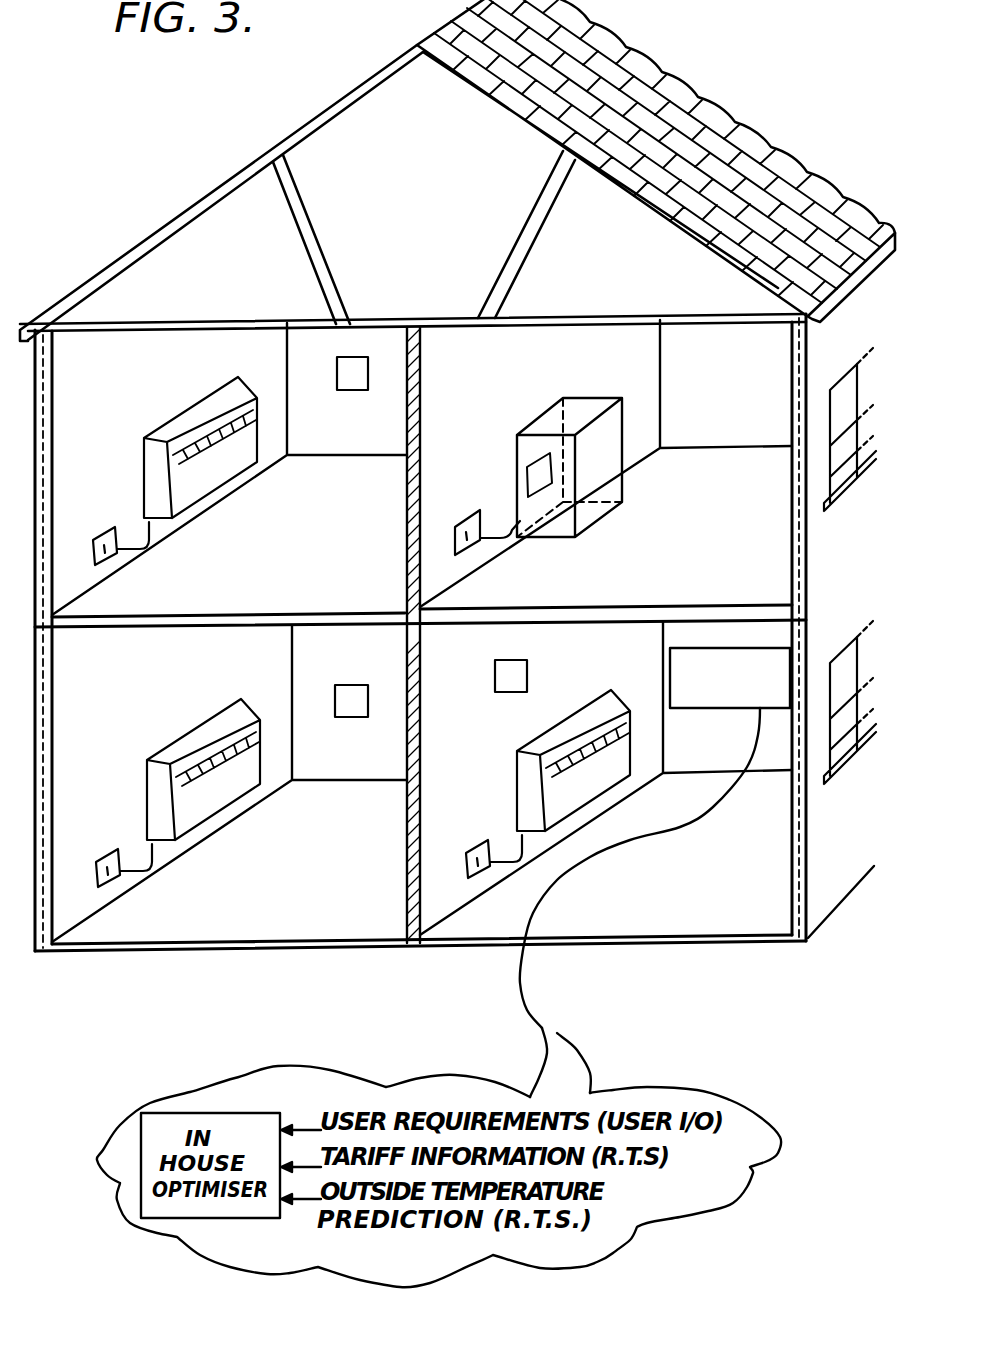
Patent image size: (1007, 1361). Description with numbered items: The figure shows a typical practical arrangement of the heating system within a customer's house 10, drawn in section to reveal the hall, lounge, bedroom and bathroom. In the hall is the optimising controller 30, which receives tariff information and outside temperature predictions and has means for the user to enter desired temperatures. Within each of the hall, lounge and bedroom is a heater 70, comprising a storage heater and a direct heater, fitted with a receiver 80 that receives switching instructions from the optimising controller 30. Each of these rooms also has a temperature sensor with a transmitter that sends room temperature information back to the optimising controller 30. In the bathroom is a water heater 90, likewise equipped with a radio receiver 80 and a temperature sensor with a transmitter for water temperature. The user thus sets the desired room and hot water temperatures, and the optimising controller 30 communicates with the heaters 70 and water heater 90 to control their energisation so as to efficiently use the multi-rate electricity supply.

The customer's house 10 is at (185, 212).
The optimising controller 30 is at (738, 693).
The heater 70 is at (174, 420).
The receiver 80 is at (110, 530).
The water heater 90 is at (547, 412).